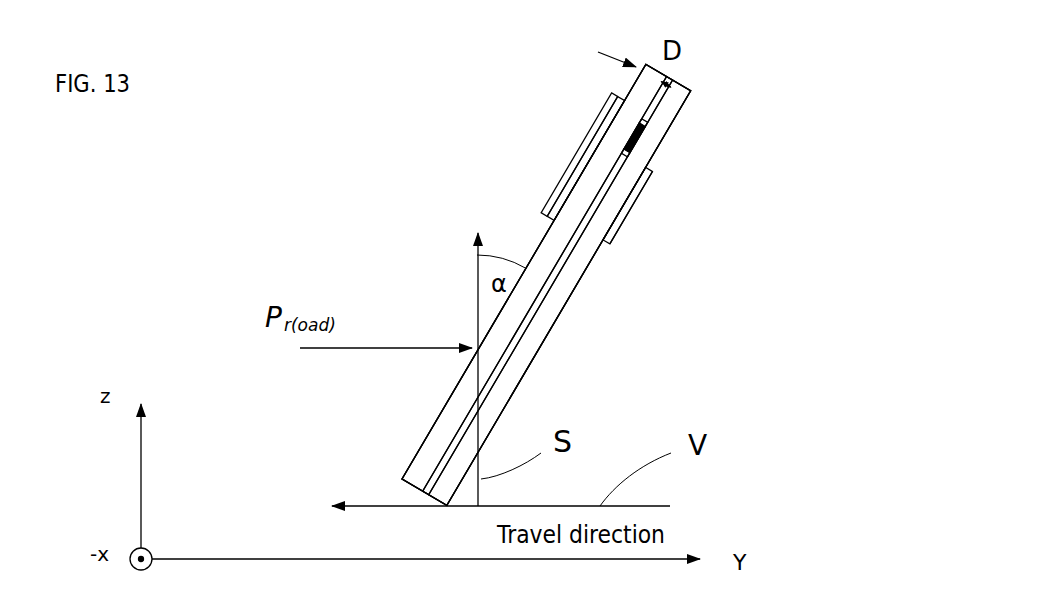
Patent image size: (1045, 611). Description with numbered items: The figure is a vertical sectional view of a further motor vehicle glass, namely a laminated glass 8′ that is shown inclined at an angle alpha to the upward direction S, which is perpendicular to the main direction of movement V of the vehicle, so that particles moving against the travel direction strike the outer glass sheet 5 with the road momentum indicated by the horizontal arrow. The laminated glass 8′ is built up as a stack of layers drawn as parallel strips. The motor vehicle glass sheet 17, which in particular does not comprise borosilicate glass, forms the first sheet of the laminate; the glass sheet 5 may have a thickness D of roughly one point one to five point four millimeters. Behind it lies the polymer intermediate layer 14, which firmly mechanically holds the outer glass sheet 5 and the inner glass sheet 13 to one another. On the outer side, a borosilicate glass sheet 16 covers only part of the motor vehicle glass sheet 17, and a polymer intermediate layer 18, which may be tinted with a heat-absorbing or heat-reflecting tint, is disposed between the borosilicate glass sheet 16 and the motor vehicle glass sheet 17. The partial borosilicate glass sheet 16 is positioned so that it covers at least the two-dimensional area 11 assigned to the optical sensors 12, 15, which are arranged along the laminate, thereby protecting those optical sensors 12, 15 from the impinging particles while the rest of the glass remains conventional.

The motor vehicle glass sheet 5 is at (606, 108).
The laminated glass 8′ is at (386, 166).
The two-dimensional area 11 is at (638, 197).
The optical sensor 12 is at (625, 228).
The inner glass sheet 13 is at (557, 298).
The polymer intermediate layer 14 is at (513, 343).
The optical sensor 15 is at (625, 150).
The borosilicate glass sheet 16 is at (596, 122).
The motor vehicle glass sheet 17 is at (543, 252).
The polymer intermediate layer 18 is at (573, 183).